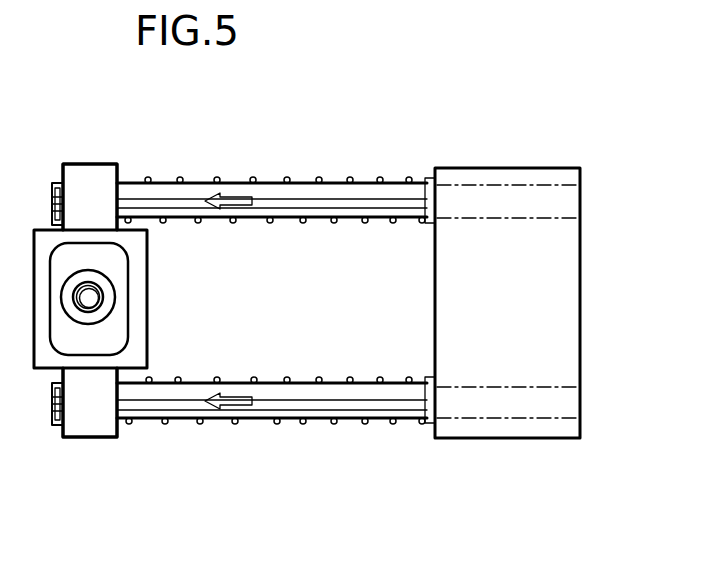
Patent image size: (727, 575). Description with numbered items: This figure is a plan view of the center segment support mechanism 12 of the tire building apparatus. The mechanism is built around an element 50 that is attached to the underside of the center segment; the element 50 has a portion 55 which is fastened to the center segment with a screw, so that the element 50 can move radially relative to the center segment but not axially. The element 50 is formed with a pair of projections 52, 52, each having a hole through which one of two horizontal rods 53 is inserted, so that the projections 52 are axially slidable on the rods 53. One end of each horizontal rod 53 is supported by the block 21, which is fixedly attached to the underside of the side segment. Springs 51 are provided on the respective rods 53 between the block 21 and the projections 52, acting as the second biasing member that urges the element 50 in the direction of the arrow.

The center segment support mechanism 12 is at (402, 152).
The block 21 is at (602, 290).
The element 50 is at (78, 437).
The spring 51 is at (253, 183).
The projection 52 is at (78, 175).
The horizontal rod 53 is at (347, 410).
The portion 55 is at (118, 340).